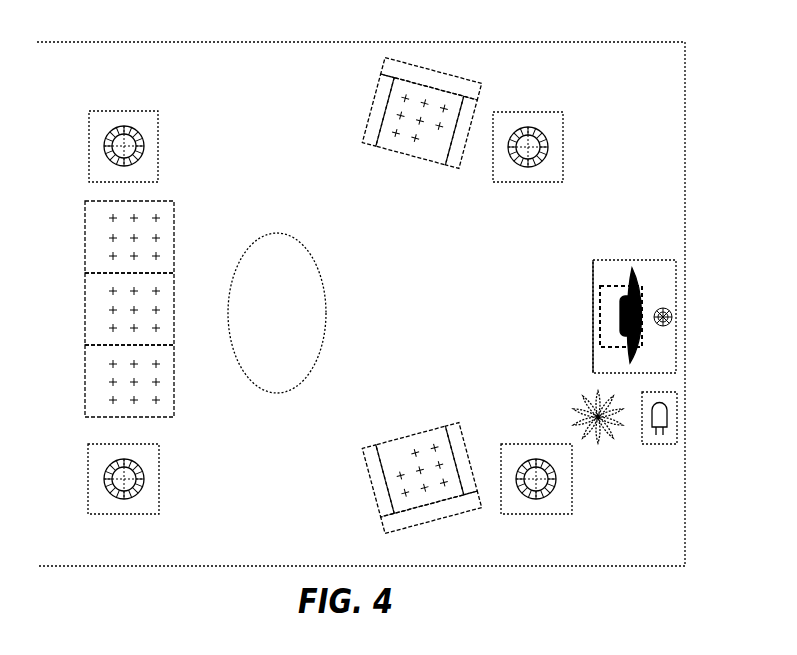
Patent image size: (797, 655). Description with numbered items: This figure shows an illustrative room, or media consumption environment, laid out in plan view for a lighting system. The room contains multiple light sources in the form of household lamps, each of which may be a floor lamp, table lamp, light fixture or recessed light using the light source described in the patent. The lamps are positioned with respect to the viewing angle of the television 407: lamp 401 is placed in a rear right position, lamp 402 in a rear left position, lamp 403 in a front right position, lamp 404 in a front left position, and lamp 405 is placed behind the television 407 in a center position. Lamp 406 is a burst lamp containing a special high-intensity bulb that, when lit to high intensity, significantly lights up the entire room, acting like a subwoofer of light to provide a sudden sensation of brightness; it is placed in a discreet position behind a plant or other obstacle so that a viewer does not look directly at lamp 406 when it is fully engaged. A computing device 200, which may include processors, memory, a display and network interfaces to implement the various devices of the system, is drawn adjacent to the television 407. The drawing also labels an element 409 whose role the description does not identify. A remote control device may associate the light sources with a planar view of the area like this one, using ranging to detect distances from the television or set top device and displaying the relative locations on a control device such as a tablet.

The computing device 200 is at (600, 300).
The lamp 401 is at (145, 475).
The lamp 402 is at (143, 145).
The lamp 403 is at (556, 477).
The lamp 404 is at (548, 147).
The lamp 405 is at (672, 316).
The burst lamp 406 is at (678, 413).
The television 407 is at (632, 268).
The display device 409 is at (592, 366).